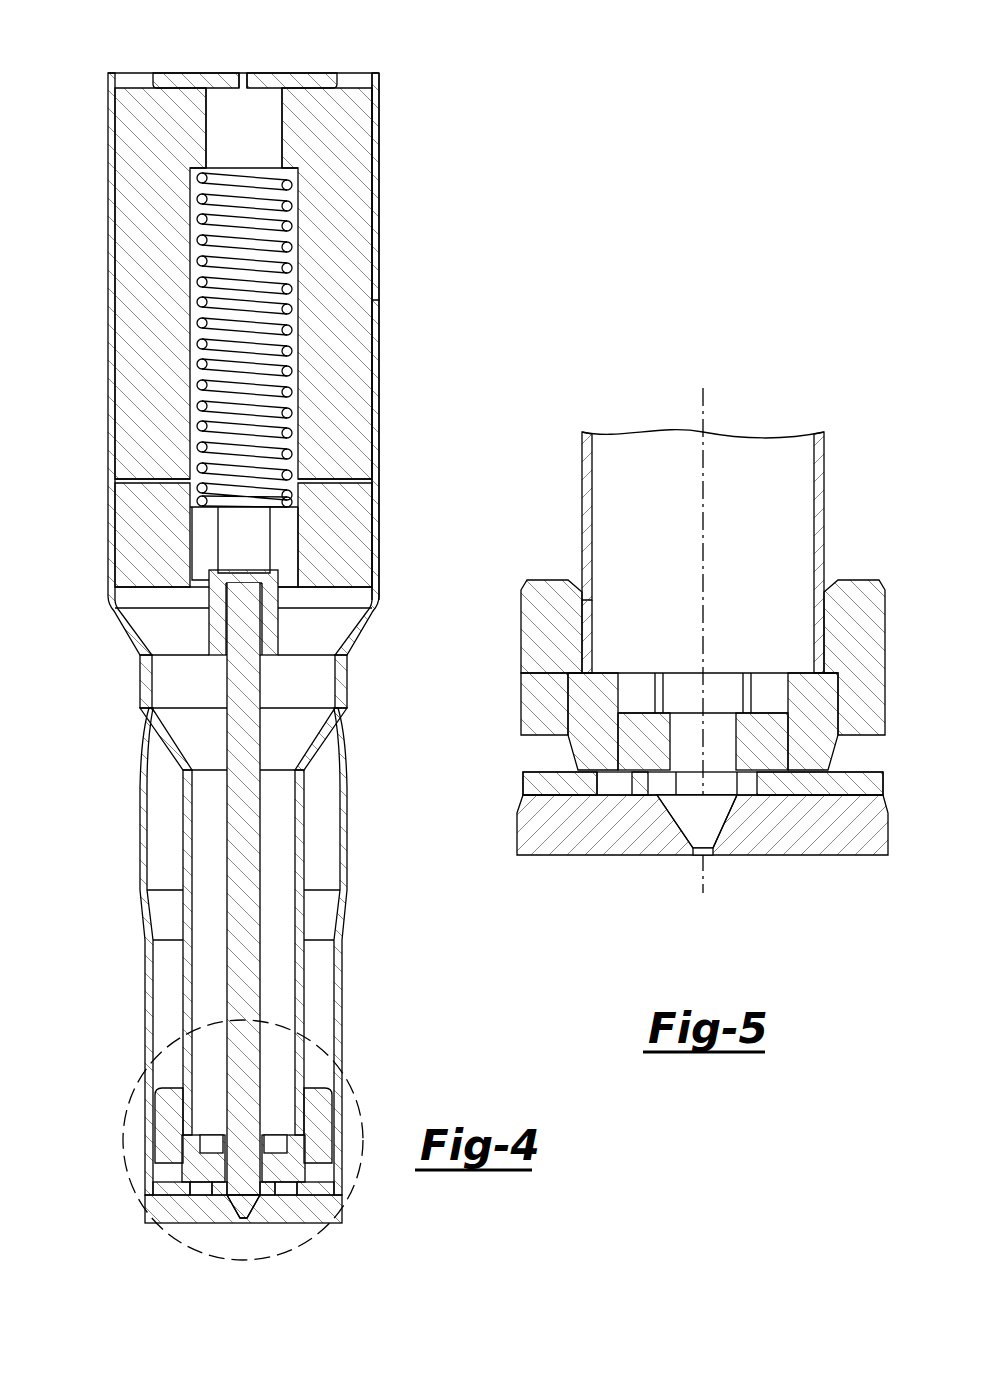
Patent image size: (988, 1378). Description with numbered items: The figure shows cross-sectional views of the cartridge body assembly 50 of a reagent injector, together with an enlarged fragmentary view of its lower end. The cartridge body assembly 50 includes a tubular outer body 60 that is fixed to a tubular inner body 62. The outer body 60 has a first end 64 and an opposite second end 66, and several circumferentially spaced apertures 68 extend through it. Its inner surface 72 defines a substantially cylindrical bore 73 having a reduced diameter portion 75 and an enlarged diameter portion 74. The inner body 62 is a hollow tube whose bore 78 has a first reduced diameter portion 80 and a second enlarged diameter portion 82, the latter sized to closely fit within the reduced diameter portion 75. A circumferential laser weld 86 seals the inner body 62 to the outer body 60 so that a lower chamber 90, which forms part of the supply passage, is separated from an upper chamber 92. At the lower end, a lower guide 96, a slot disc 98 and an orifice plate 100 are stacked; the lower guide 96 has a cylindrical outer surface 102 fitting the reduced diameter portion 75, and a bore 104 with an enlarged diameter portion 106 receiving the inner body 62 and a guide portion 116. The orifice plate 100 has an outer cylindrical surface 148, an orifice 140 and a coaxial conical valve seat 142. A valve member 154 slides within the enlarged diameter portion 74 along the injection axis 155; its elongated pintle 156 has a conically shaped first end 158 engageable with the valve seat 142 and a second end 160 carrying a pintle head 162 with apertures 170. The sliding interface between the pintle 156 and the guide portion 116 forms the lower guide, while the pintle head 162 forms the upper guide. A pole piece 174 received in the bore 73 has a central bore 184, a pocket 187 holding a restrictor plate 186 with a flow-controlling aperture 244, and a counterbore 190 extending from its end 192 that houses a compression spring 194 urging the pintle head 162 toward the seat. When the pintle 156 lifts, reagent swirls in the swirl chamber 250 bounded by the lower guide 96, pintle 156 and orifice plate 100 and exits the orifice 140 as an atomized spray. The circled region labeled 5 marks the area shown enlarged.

In FIG. 4, the cartridge body assembly 50 is at (381, 183).
In FIG. 4, the second end 66 is at (108, 117).
In FIG. 4, the enlarged diameter portion 74 is at (373, 142).
In FIG. 4, the end 192 is at (372, 470).
In FIG. 4, the restrictor plate 186 is at (170, 75).
In FIG. 4, the pocket 187 is at (301, 87).
In FIG. 4, the aperture 244 is at (243, 72).
In FIG. 4, the central bore 184 is at (282, 120).
In FIG. 4, the pole piece 174 is at (145, 307).
In FIG. 4, the compression spring 194 is at (203, 220).
In FIG. 4, the counterbore 190 is at (287, 267).
In FIG. 4, the apertures 170 is at (193, 528).
In FIG. 4, the pintle head 162 is at (348, 520).
In FIG. 4, the upper chamber 92 is at (125, 596).
In FIG. 4, the second end 160 is at (250, 600).
In FIG. 4, the second enlarged diameter portion 82 is at (335, 688).
In FIG. 4, the laser weld 86 is at (143, 680).
In FIG. 4, the apertures 68 is at (153, 753).
In FIG. 4, the tubular outer body 60 is at (140, 823).
In FIG. 4, the inner surface 72 is at (335, 982).
In FIG. 4, the lower chamber 90 is at (180, 860).
In FIG. 4, the tubular inner body 62 is at (303, 833).
In FIG. 4, the valve member 154 is at (263, 708).
In FIG. 4, the pintle 156 is at (258, 882).
In FIG. 4, the bore 73 is at (185, 1080).
In FIG. 4, the first reduced diameter portion 80 is at (297, 1032).
In FIG. 4, the reduced diameter portion 75 is at (182, 1137).
In FIG. 4, the bore 78 is at (295, 1112).
In FIG. 5, the bore 78 is at (592, 483).
In FIG. 4, the first end 64 is at (133, 1220).
In FIG. 4, the conically shaped first end 158 is at (240, 1208).
In FIG. 4, the detail view indicator 5 is at (350, 1076).
In FIG. 5, the injection axis 155 is at (703, 472).
In FIG. 5, the enlarged diameter portion 106 is at (590, 615).
In FIG. 5, the bore 104 is at (817, 615).
In FIG. 5, the cylindrical outer surface 102 is at (521, 640).
In FIG. 5, the lower guide 96 is at (521, 695).
In FIG. 5, the guide portion 116 is at (684, 730).
In FIG. 5, the slot disc 98 is at (521, 775).
In FIG. 5, the outer cylindrical surface 148 is at (535, 790).
In FIG. 5, the orifice plate 100 is at (517, 830).
In FIG. 5, the orifice 140 is at (705, 856).
In FIG. 5, the conical valve seat 142 is at (673, 813).
In FIG. 5, the swirl chamber 250 is at (752, 784).